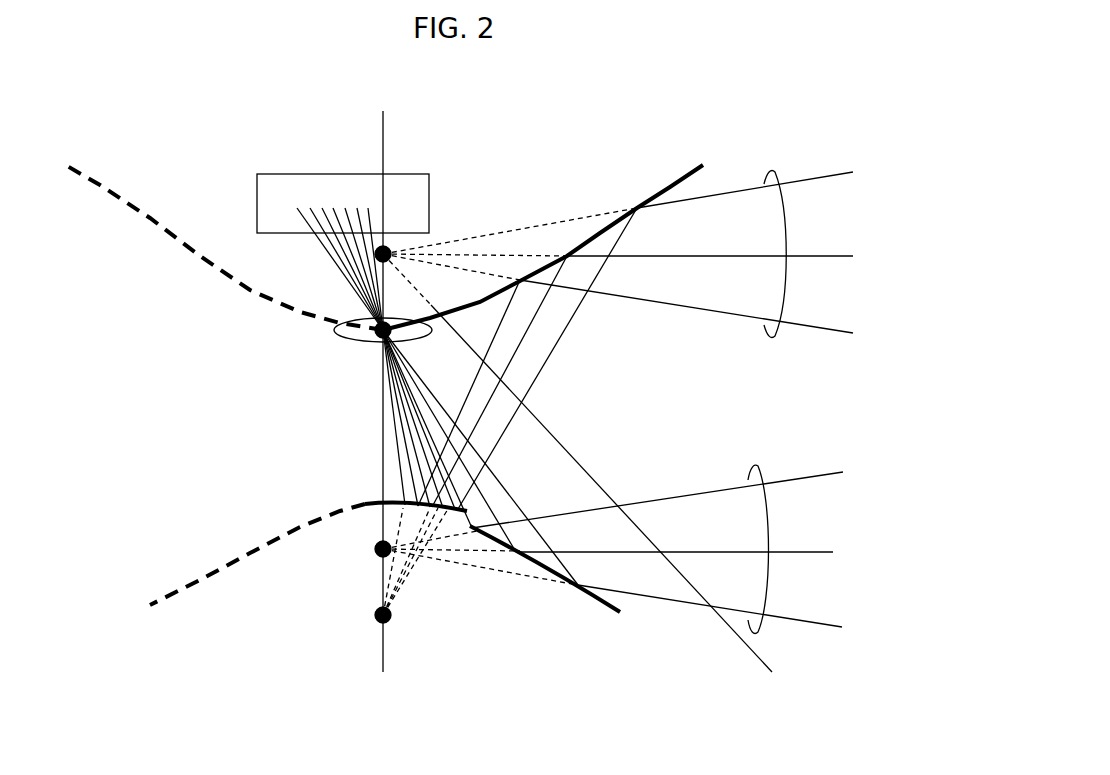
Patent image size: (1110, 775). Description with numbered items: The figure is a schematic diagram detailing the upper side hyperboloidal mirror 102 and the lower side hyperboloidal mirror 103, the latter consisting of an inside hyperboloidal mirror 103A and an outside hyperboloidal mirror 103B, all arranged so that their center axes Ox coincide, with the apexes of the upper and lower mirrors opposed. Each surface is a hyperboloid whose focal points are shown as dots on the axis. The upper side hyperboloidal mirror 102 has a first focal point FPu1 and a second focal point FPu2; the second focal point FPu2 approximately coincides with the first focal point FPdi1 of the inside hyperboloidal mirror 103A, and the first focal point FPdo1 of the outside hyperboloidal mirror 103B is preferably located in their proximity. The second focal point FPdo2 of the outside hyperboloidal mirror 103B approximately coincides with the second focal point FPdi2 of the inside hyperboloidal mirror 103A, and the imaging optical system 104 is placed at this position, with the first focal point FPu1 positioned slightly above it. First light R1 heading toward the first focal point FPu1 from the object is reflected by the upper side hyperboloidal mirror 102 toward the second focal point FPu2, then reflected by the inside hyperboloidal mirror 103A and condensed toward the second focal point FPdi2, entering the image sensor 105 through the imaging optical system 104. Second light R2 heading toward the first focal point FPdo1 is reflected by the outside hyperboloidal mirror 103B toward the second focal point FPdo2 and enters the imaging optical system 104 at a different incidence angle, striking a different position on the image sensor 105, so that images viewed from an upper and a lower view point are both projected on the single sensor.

The upper side hyperboloidal mirror 102 is at (672, 184).
The lower side hyperboloidal mirror 103 is at (385, 620).
The inside hyperboloidal mirror 103A is at (455, 513).
The outside hyperboloidal mirror 103B is at (545, 605).
The imaging optical system 104 is at (335, 329).
The image sensor 105 is at (278, 173).
The first light R1 is at (770, 177).
The second light R2 is at (753, 469).
The center axis Ox is at (382, 377).
The first focal point of the upper side hyperboloidal mirror FPu1 is at (386, 253).
The second focal point of the outside hyperboloidal mirror FPdo2 is at (303, 368).
The second focal point of the inside hyperboloidal mirror FPdi2 is at (380, 341).
The first focal point of the outside hyperboloidal mirror FPdo1 is at (376, 551).
The second focal point of the upper side hyperboloidal mirror FPu2 is at (335, 580).
The first focal point of the inside hyperboloidal mirror FPdi1 is at (376, 618).